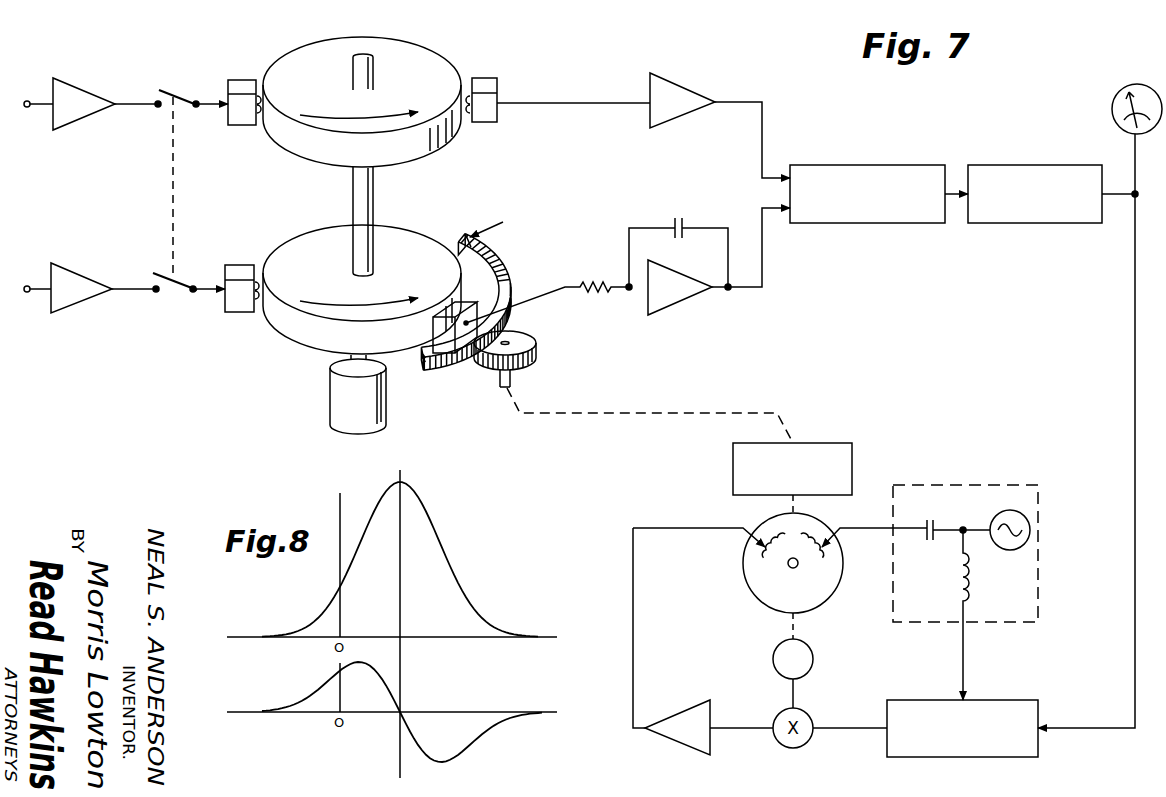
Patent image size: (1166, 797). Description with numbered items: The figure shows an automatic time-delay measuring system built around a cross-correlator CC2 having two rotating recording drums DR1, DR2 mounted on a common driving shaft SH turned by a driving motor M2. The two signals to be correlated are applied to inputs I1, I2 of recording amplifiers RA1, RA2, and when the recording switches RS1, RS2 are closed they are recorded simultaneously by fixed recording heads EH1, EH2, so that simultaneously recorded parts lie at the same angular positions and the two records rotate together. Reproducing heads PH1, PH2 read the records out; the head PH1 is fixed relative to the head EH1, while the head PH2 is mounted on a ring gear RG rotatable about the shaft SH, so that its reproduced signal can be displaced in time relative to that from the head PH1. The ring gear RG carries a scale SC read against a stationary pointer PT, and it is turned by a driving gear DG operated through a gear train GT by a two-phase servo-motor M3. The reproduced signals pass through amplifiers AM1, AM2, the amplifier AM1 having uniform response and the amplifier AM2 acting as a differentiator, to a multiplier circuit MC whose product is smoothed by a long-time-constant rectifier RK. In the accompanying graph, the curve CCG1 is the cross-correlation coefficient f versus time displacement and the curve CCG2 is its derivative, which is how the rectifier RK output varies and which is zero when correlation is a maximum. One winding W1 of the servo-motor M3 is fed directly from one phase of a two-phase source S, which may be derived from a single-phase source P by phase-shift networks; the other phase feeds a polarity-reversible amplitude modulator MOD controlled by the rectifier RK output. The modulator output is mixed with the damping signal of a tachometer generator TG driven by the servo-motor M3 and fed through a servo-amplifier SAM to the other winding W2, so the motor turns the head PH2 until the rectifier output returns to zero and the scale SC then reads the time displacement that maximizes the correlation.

In FIG. 7, the input I1 is at (30, 105).
In FIG. 7, the recording amplifier RA1 is at (105, 104).
In FIG. 7, the recording switch RS1 is at (181, 97).
In FIG. 7, the recording head EH1 is at (247, 125).
In FIG. 7, the recording drum DR1 is at (310, 50).
In FIG. 7, the reproducing head PH1 is at (490, 78).
In FIG. 7, the amplifier AM1 is at (720, 125).
In FIG. 7, the multiplier circuit MC is at (890, 165).
In FIG. 7, the rectifier RK is at (1050, 165).
In FIG. 7, the driving shaft SH is at (374, 199).
In FIG. 7, the input I2 is at (29, 290).
In FIG. 7, the recording amplifier RA2 is at (103, 288).
In FIG. 7, the recording switch RS2 is at (175, 292).
In FIG. 7, the recording head EH2 is at (238, 265).
In FIG. 7, the recording drum DR2 is at (310, 236).
In FIG. 7, the reproducing head PH2 is at (448, 317).
In FIG. 7, the pointer PT is at (500, 222).
In FIG. 7, the scale SC is at (511, 272).
In FIG. 7, the ring gear RG is at (438, 371).
In FIG. 7, the driving gear DG is at (538, 342).
In FIG. 7, the driving motor M2 is at (358, 394).
In FIG. 7, the amplifier AM2 is at (708, 261).
In FIG. 7, the cross-correlator CC2 is at (732, 365).
In FIG. 7, the gear train GT is at (805, 443).
In FIG. 7, the servo-motor M3 is at (793, 563).
In FIG. 7, the winding W1 is at (833, 578).
In FIG. 7, the winding W2 is at (755, 566).
In FIG. 7, the single phase source P is at (1007, 511).
In FIG. 7, the two-phase source S is at (1042, 556).
In FIG. 7, the polarity reversible amplitude modulator MOD is at (982, 700).
In FIG. 7, the tachometer generator TG is at (793, 660).
In FIG. 7, the servo-amplifier SAM is at (671, 641).
In FIG. 8, the graph CCG1 is at (432, 522).
In FIG. 8, the graph CCG2 is at (392, 686).
In FIG. 8, the correlation function f is at (355, 569).